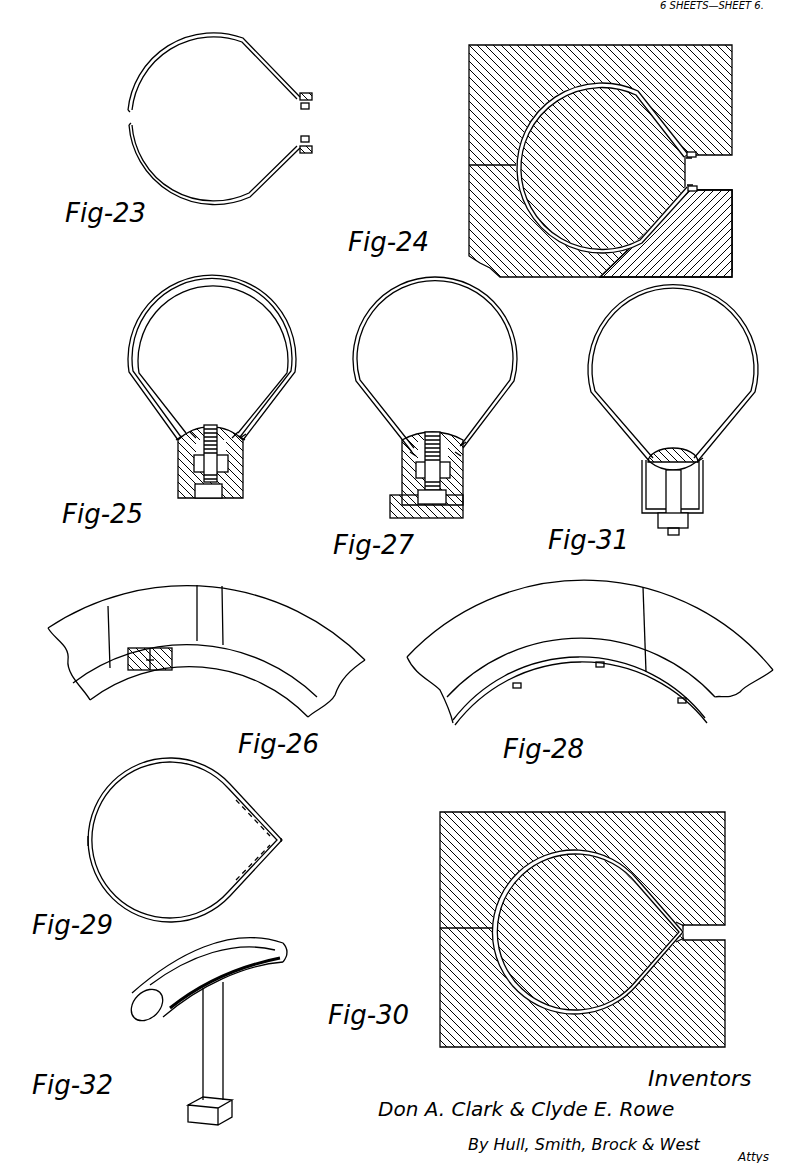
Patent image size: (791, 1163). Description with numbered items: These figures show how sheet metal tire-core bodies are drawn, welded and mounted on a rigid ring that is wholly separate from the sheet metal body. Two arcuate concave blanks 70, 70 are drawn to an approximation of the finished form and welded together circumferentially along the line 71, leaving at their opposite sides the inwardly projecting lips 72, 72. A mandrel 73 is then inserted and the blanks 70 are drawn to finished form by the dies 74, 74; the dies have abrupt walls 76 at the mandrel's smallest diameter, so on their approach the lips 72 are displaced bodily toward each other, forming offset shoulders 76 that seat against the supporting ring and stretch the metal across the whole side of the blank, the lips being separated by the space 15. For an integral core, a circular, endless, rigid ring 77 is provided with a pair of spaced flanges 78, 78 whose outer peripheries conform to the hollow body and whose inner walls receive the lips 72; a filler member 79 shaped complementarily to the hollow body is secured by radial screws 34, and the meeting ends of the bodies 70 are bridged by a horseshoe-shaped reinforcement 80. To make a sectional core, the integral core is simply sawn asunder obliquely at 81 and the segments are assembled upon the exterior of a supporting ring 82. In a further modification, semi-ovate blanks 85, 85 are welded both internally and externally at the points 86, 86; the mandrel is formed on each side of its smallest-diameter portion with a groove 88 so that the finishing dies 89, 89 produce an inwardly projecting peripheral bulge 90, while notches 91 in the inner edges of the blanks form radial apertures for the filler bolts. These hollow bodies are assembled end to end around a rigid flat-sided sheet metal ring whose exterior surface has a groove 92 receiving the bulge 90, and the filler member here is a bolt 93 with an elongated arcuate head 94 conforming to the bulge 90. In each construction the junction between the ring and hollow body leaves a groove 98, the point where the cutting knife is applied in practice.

In FIG. 24, the space between flanges 15 is at (700, 167).
In FIG. 25, the radial screw 34 is at (206, 497).
In FIG. 26, the radial screw 34 is at (152, 672).
In FIG. 23, the blank 70 is at (180, 42).
In FIG. 25, the blank 70 is at (142, 320).
In FIG. 27, the blank 70 is at (369, 311).
In FIG. 26, the blank 70 is at (110, 612).
In FIG. 28, the blank 70 is at (590, 651).
In FIG. 23, the weld line 71 is at (127, 116).
In FIG. 23, the inwardly projecting lip 72 is at (312, 96).
In FIG. 24, the inwardly projecting lip 72 is at (697, 188).
In FIG. 25, the inwardly projecting lip 72 is at (196, 463).
In FIG. 27, the inwardly projecting lip 72 is at (418, 463).
In FIG. 24, the mandrel 73 is at (595, 125).
In FIG. 24, the die 74 is at (469, 128).
In FIG. 23, the abrupt wall / offset shoulder 76 is at (300, 107).
In FIG. 24, the abrupt wall / offset shoulder 76 is at (700, 156).
In FIG. 25, the abrupt wall / offset shoulder 76 is at (193, 432).
In FIG. 27, the abrupt wall / offset shoulder 76 is at (462, 453).
In FIG. 25, the rigid ring 77 is at (244, 473).
In FIG. 27, the rigid ring 77 is at (463, 477).
In FIG. 26, the rigid ring 77 is at (218, 668).
In FIG. 28, the rigid ring 77 is at (581, 667).
In FIG. 25, the flange 78 is at (178, 449).
In FIG. 27, the flange 78 is at (410, 451).
In FIG. 25, the filler member 79 is at (215, 427).
In FIG. 27, the filler member 79 is at (445, 446).
In FIG. 26, the filler member 79 is at (162, 648).
In FIG. 25, the reinforcement 80 is at (241, 290).
In FIG. 26, the reinforcement 80 is at (197, 590).
In FIG. 28, the oblique saw cut 81 is at (648, 590).
In FIG. 27, the supporting ring 82 is at (390, 510).
In FIG. 28, the supporting ring 82 is at (620, 678).
In FIG. 31, the blank 85 is at (607, 322).
In FIG. 29, the blank 85 is at (160, 758).
In FIG. 29, the welding point 86 is at (88, 842).
In FIG. 30, the groove 88 is at (680, 916).
In FIG. 30, the finishing die 89 is at (440, 880).
In FIG. 31, the peripheral bulge 90 is at (672, 450).
In FIG. 30, the peripheral bulge 90 is at (700, 920).
In FIG. 29, the notch 91 is at (285, 838).
In FIG. 31, the groove 92 is at (703, 474).
In FIG. 31, the bolt 93 is at (668, 492).
In FIG. 32, the bolt 93 is at (225, 1040).
In FIG. 31, the arcuate head 94 is at (685, 452).
In FIG. 32, the arcuate head 94 is at (265, 938).
In FIG. 25, the groove 98 is at (246, 437).
In FIG. 27, the groove 98 is at (463, 448).
In FIG. 31, the groove 98 is at (703, 458).